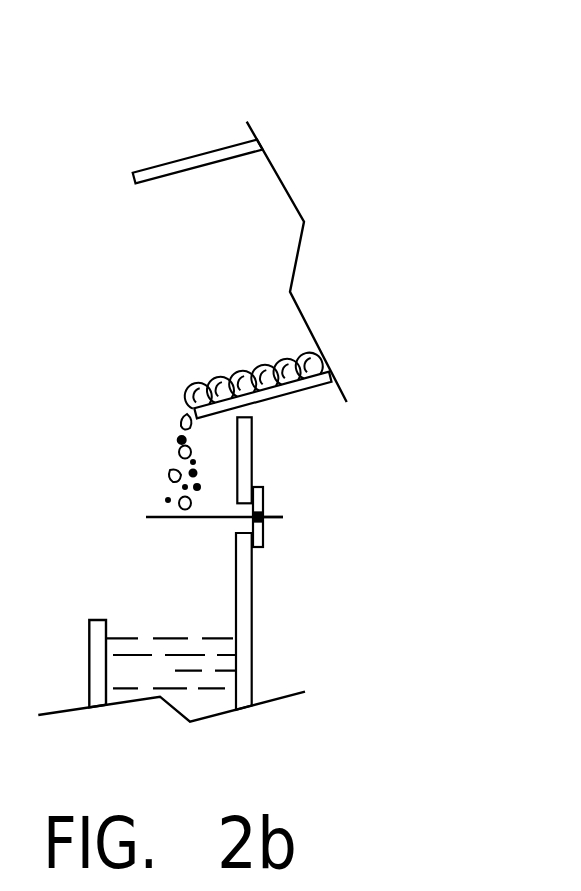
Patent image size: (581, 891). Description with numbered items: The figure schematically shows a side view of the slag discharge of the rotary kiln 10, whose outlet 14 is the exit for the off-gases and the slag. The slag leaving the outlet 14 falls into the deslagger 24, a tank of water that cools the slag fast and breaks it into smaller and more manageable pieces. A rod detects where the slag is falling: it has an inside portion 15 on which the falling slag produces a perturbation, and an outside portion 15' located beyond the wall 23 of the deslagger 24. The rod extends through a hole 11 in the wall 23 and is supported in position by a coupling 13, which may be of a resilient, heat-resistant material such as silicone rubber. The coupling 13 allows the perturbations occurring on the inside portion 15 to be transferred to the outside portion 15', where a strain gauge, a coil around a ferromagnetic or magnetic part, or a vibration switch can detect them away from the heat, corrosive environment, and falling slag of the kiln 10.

The rotary kiln 10 is at (167, 169).
The outlet 14 is at (203, 261).
The hole 11 is at (233, 527).
The coupling 13 is at (262, 487).
The inside portion 15 is at (182, 545).
The outside portion 15' is at (305, 550).
The wall 23 is at (240, 658).
The deslagger 24 is at (167, 670).